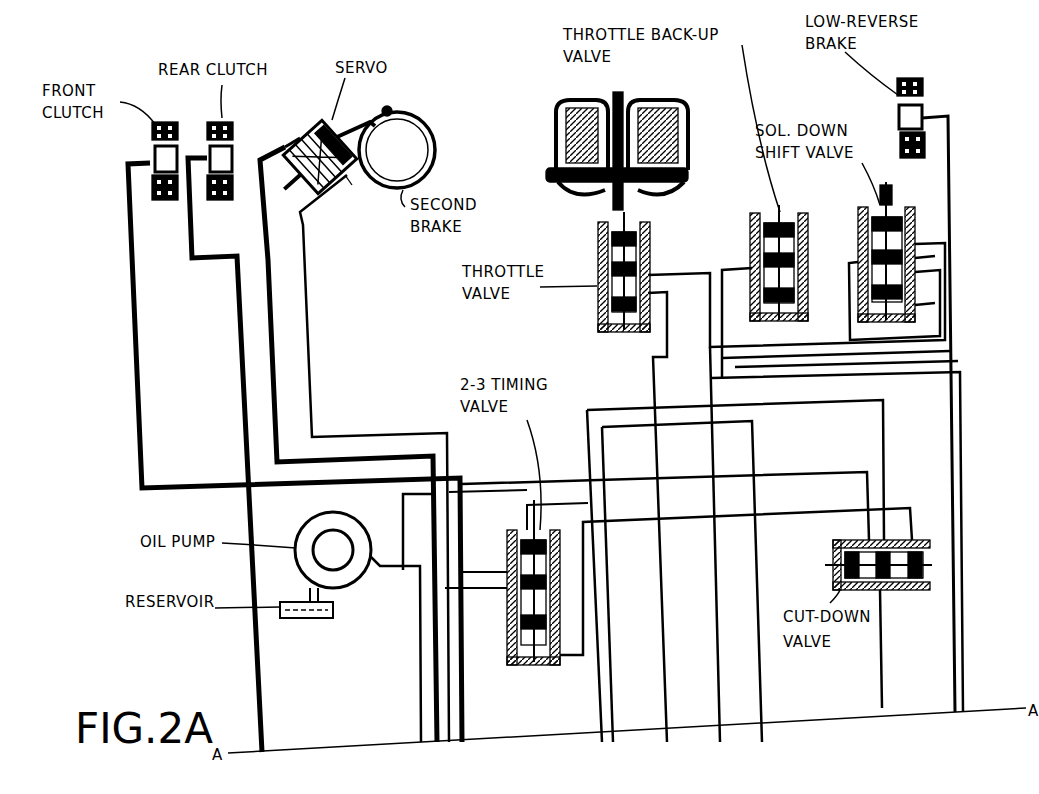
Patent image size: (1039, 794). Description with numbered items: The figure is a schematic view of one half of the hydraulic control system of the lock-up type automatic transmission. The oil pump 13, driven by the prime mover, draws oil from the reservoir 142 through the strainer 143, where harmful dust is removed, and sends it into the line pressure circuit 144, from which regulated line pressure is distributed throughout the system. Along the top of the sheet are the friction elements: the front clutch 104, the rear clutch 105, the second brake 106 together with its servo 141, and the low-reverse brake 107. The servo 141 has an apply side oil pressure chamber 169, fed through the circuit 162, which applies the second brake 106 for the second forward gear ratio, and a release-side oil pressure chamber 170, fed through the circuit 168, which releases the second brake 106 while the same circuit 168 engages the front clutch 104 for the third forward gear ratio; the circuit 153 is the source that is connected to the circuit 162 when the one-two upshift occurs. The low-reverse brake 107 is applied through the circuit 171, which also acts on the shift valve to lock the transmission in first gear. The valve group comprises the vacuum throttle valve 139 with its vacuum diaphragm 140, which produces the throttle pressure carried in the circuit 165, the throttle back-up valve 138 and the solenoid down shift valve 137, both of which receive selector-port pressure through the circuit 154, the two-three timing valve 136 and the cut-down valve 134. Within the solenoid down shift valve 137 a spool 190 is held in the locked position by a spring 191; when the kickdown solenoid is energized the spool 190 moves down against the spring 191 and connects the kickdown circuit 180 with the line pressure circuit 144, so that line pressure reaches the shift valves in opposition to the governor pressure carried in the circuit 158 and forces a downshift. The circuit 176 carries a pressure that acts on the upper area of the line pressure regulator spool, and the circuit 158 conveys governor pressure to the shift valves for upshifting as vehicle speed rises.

The oil pump 13 is at (318, 515).
The front clutch 104 is at (156, 152).
The rear clutch 105 is at (210, 130).
The second brake 106 is at (428, 133).
The low-reverse brake 107 is at (975, 103).
The cut-down valve 134 is at (918, 540).
The 2-3 timing valve 136 is at (508, 655).
The solenoid down shift valve 137 is at (935, 188).
The throttle back-up valve 138 is at (820, 193).
The vacuum throttle valve 139 is at (692, 218).
The vacuum diaphragm 140 is at (705, 128).
The servo 141 is at (304, 128).
The reservoir 142 is at (308, 618).
The strainer 143 is at (294, 606).
The line pressure circuit 144 is at (668, 312).
The circuit 153 is at (238, 365).
The circuit 154 is at (913, 255).
The circuit 158 is at (915, 700).
The circuit 162 is at (266, 222).
The circuit 165 is at (710, 386).
The circuit 168 is at (136, 233).
The apply side oil pressure chamber 169 is at (296, 140).
The release-side oil pressure chamber 170 is at (356, 166).
The circuit 171 is at (953, 223).
The circuit 176 is at (474, 497).
The kickdown circuit 180 is at (850, 325).
The spool 190 is at (905, 262).
The spring 191 is at (905, 315).